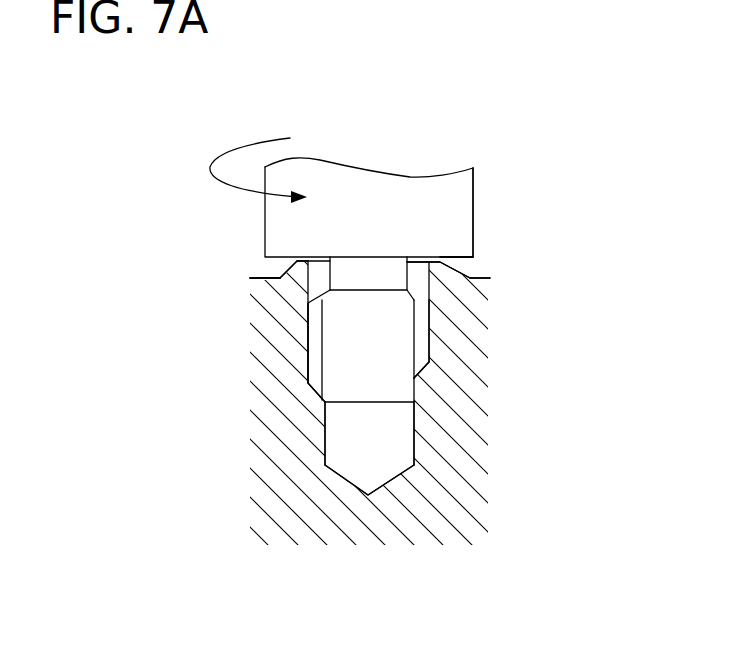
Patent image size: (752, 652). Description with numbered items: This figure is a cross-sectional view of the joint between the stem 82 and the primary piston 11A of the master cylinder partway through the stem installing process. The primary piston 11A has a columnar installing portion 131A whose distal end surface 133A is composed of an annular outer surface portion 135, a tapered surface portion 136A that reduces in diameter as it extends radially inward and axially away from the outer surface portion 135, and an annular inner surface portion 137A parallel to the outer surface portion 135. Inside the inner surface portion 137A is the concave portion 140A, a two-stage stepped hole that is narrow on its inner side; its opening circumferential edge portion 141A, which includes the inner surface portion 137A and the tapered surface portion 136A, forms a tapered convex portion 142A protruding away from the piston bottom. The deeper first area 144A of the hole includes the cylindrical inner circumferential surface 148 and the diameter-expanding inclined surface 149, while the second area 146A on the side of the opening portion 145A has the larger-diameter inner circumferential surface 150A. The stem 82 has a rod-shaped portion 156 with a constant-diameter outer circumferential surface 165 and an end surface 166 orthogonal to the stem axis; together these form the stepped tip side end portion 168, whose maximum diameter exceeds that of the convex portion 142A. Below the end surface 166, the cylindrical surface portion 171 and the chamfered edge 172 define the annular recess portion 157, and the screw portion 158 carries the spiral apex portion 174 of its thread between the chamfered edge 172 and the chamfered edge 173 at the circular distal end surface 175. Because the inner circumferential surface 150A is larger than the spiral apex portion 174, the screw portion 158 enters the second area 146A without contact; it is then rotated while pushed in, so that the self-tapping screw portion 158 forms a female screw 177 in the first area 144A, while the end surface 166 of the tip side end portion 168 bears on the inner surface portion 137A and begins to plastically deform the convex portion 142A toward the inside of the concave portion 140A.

The primary piston 11A is at (526, 541).
The stem 82 is at (418, 171).
The installing portion 131A is at (467, 490).
The distal end surface 133A is at (267, 278).
The outer surface portion 135 is at (251, 278).
The tapered surface portion 136A is at (295, 258).
The inner surface portion 137A is at (443, 257).
The concave portion 140A is at (338, 444).
The opening circumferential edge portion 141A is at (225, 159).
The convex portion 142A is at (312, 263).
The first area 144A is at (243, 454).
The opening portion 145A is at (292, 268).
The second area 146A is at (243, 338).
The inner circumferential surface 148 is at (413, 441).
The inclined surface 149 is at (305, 370).
The inner circumferential surface 150A is at (308, 322).
The rod-shaped portion 156 is at (358, 183).
The annular recess portion 157 is at (408, 271).
The screw portion 158 is at (430, 357).
The outer circumferential surface 165 is at (473, 203).
The end surface 166 is at (412, 264).
The tip side end portion 168 is at (473, 255).
The cylindrical surface portion 171 is at (418, 293).
The chamfered edge 172 is at (420, 306).
The chamfered edge 173 is at (433, 400).
The spiral apex portion 174 is at (433, 331).
The distal end surface 175 is at (390, 468).
The female screw 177 is at (340, 419).